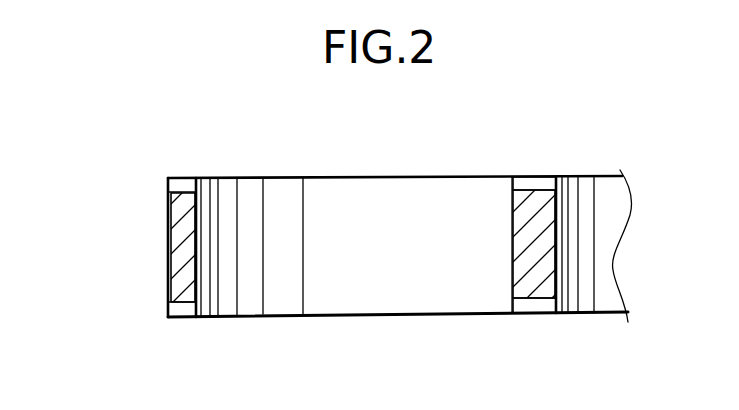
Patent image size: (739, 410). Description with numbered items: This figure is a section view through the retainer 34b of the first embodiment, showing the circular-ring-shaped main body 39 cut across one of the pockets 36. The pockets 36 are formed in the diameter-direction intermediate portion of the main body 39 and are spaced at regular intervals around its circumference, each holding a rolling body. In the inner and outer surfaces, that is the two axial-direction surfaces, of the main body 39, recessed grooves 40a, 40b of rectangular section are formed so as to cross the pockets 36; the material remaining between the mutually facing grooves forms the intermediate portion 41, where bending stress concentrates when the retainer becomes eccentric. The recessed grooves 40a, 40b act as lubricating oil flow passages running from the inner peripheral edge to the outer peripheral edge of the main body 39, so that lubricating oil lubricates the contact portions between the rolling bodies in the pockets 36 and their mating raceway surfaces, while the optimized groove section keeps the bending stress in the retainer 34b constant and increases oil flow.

The retainer 34b is at (178, 210).
The pocket 36 is at (513, 212).
The circular-ring-shaped main body 39 is at (178, 277).
The recessed groove 40a is at (533, 188).
The recessed groove 40b is at (186, 194).
The intermediate portion 41 is at (197, 258).